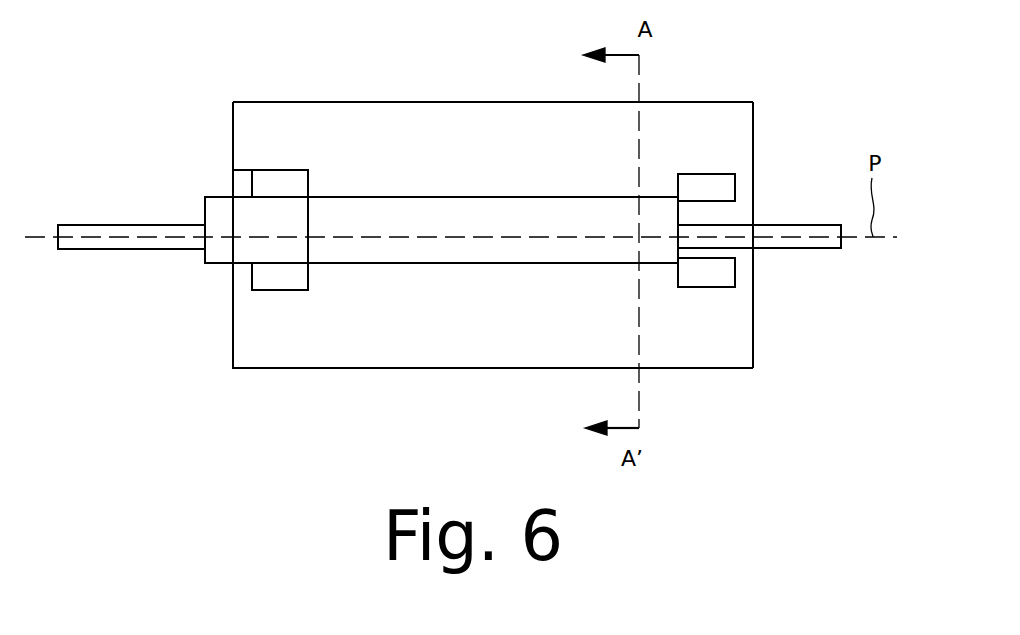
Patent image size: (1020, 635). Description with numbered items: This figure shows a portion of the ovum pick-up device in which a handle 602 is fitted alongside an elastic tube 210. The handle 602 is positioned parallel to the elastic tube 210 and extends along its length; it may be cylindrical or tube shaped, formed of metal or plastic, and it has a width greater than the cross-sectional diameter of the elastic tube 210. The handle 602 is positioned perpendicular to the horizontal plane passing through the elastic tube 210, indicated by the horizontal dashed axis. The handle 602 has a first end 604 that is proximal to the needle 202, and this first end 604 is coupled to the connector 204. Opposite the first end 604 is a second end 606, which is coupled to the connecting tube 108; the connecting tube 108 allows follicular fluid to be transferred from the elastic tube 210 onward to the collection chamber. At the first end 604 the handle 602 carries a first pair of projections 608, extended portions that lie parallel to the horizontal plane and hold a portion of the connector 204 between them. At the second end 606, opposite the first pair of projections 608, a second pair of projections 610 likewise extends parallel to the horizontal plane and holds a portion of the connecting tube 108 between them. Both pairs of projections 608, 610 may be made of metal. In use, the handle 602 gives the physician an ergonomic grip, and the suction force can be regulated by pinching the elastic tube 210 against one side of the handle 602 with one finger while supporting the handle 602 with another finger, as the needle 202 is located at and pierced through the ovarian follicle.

The connecting tube 108 is at (790, 248).
The needle 202 is at (100, 250).
The connector 204 is at (220, 263).
The elastic tube 210 is at (370, 263).
The handle 602 is at (490, 368).
The first end 604 is at (242, 102).
The second end 606 is at (740, 368).
The first pair of projections 608 is at (252, 288).
The second pair of projections 610 is at (735, 282).